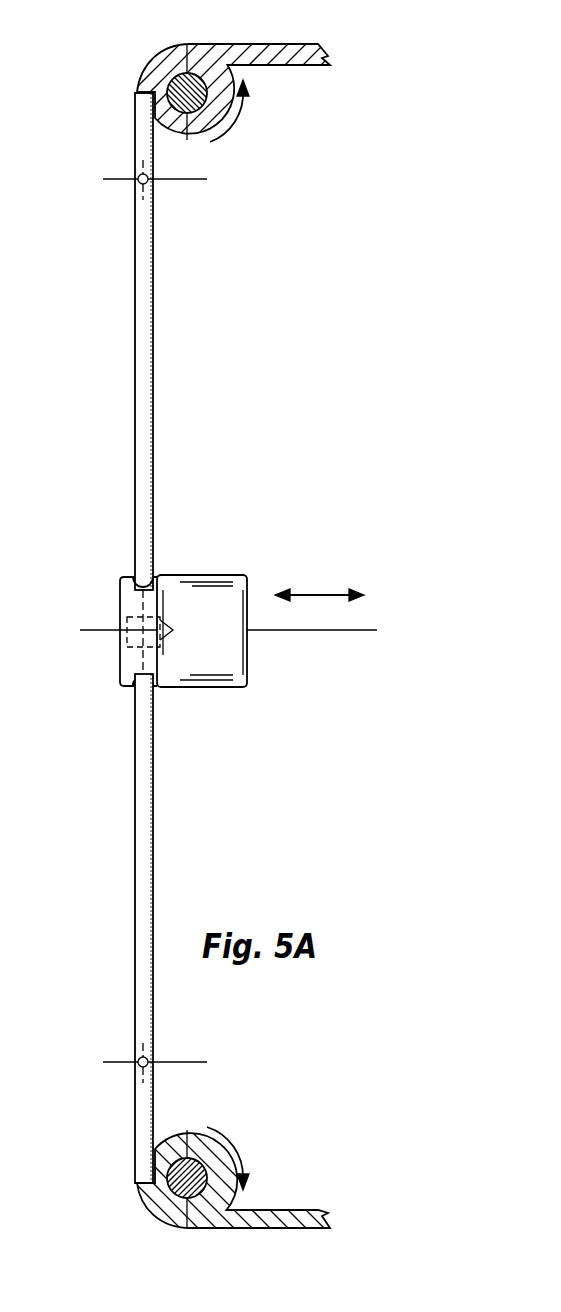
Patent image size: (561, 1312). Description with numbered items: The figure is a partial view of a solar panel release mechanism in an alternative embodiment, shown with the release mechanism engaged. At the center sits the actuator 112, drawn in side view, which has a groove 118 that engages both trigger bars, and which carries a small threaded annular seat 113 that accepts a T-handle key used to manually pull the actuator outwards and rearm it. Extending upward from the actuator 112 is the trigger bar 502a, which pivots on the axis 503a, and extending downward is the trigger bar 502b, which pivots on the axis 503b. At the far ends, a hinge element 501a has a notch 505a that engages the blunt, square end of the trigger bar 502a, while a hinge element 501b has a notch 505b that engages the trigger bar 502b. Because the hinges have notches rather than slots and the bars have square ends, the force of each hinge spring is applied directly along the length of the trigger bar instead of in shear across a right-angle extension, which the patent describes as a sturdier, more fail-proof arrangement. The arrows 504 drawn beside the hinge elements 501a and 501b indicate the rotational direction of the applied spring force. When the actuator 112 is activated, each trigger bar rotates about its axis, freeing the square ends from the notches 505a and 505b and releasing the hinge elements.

The actuator 112 is at (205, 575).
The threaded annular seat 113 is at (120, 627).
The groove 118 is at (140, 672).
The hinge element 501a is at (203, 44).
The hinge element 501b is at (140, 1200).
The trigger bar 502a is at (140, 288).
The trigger bar 502b is at (140, 873).
The axis 503a is at (137, 179).
The axis 503b is at (137, 1062).
The arrows 504 is at (232, 124).
The notch 505a is at (146, 86).
The notch 505b is at (142, 1172).